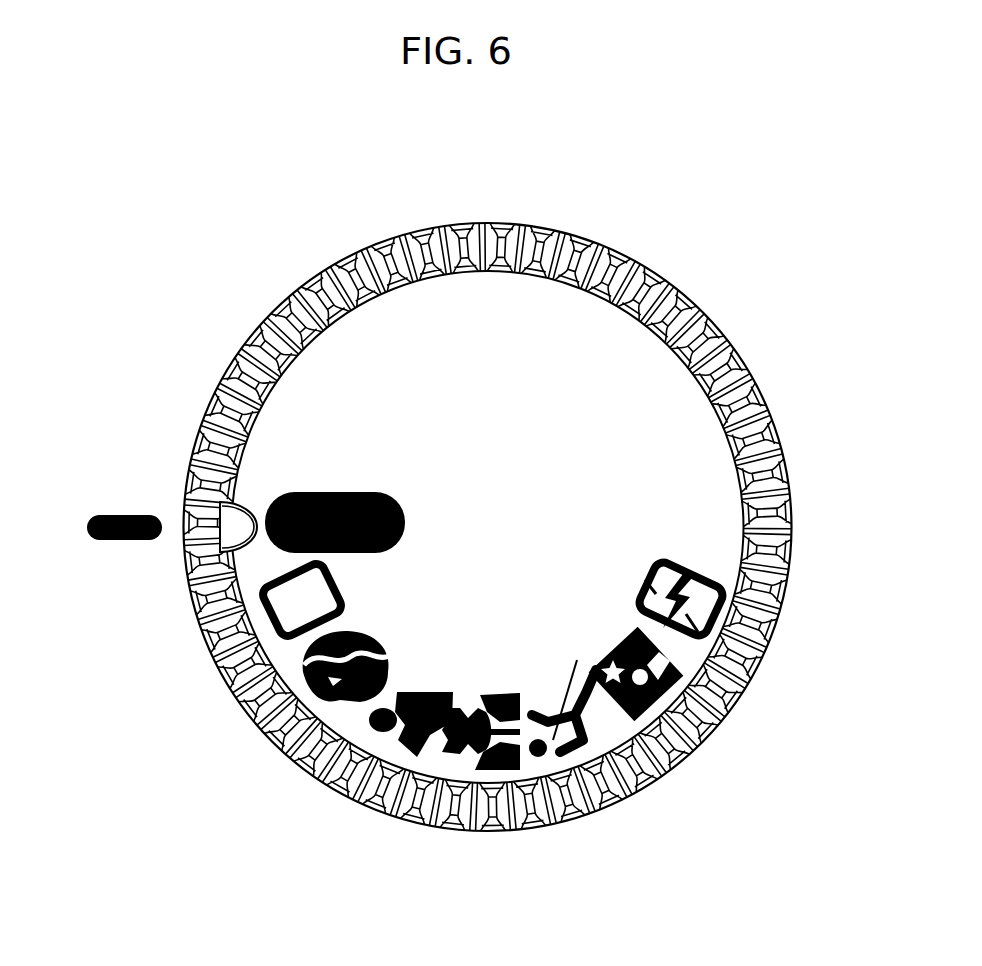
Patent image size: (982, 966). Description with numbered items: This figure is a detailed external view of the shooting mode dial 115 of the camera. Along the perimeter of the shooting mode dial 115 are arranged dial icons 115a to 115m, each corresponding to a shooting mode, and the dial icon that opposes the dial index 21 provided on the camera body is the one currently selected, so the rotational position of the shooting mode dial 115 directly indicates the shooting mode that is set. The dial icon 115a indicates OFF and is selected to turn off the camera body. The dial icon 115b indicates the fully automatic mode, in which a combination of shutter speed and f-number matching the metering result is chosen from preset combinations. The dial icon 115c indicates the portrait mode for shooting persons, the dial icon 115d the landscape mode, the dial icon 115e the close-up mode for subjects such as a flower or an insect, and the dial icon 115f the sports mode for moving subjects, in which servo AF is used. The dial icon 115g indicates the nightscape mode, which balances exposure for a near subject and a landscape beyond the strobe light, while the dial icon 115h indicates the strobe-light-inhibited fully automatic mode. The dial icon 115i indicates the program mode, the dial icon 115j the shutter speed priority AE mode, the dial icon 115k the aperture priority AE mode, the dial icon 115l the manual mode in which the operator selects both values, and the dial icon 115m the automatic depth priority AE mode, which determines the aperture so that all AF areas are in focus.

The shooting mode dial 115 is at (667, 393).
The dial index 21 is at (112, 515).
The dial icon 115a is at (277, 500).
The dial icon 115b is at (262, 603).
The dial icon 115c is at (327, 698).
The dial icon 115d is at (387, 742).
The dial icon 115e is at (465, 757).
The dial icon 115f is at (595, 748).
The dial icon 115g is at (665, 700).
The dial icon 115h is at (723, 610).
The dial icon 115i is at (255, 432).
The dial icon 115j is at (317, 352).
The dial icon 115k is at (400, 300).
The dial icon 115l is at (490, 273).
The dial icon 115m is at (590, 297).